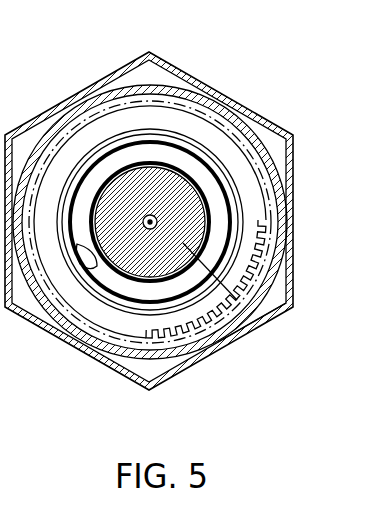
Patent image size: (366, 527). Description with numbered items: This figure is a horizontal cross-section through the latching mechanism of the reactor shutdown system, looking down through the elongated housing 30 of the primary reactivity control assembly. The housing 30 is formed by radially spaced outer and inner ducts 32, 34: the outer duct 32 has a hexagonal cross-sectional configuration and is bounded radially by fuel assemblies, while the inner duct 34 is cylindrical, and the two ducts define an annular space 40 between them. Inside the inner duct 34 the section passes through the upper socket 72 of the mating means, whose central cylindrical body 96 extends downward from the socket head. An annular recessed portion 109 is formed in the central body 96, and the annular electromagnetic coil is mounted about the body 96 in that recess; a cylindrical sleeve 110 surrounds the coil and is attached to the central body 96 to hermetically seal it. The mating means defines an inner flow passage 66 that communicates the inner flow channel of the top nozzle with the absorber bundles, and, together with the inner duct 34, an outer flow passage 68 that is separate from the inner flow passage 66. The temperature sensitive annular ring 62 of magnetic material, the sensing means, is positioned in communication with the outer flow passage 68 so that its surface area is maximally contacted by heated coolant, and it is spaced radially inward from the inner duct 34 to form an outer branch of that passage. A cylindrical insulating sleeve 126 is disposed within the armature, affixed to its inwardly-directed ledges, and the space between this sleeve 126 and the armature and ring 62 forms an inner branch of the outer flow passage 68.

The housing 30 is at (277, 321).
The outer duct 32 is at (246, 108).
The inner duct 34 is at (256, 146).
The annular space 40 is at (152, 80).
The temperature sensitive annular ring 62 is at (133, 322).
The inner flow passage 66 is at (182, 166).
The outer flow passage 68 is at (192, 258).
The upper socket 72 is at (133, 265).
The central cylindrical body 96 is at (237, 300).
The annular recessed portion 109 is at (147, 172).
The cylindrical sleeve 110 is at (120, 196).
The insulating sleeve 126 is at (72, 336).